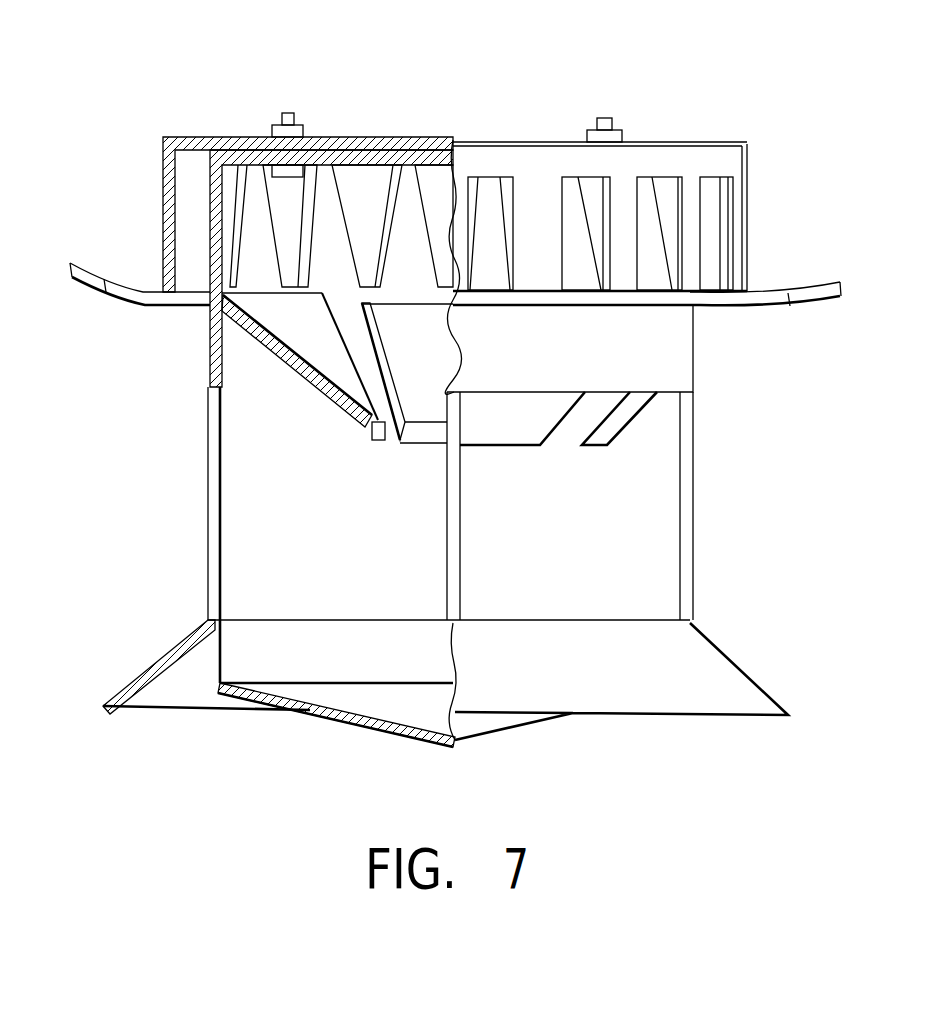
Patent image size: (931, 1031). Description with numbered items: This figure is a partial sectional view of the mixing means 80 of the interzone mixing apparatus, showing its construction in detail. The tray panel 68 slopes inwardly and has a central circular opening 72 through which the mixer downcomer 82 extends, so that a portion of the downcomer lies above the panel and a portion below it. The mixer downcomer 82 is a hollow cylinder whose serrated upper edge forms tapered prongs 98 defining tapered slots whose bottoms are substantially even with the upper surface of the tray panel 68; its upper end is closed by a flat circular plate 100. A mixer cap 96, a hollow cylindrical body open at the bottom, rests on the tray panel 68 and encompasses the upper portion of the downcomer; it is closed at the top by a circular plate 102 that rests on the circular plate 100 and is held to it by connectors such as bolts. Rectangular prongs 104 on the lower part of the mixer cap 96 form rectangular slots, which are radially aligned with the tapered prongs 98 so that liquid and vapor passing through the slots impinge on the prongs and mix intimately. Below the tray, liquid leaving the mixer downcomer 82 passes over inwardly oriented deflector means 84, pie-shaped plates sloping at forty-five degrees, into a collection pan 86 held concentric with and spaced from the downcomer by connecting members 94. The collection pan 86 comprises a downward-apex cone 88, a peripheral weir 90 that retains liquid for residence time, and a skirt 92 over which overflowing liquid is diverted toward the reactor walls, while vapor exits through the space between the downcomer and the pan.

The tray panel 68 is at (97, 288).
The circular opening 72 is at (752, 310).
The mixing means 80 is at (457, 95).
The mixer downcomer 82 is at (697, 342).
The deflector means 84 is at (338, 372).
The collection pan 86 is at (342, 642).
The cone 88 is at (357, 720).
The peripheral weir 90 is at (263, 618).
The skirt 92 is at (720, 665).
The connecting members 94 is at (207, 503).
The mixer cap 96 is at (746, 243).
The tapered prongs 98 is at (390, 183).
The flat circular plate 100 is at (233, 157).
The circular plate 102 is at (165, 136).
The rectangular prongs 104 is at (560, 190).